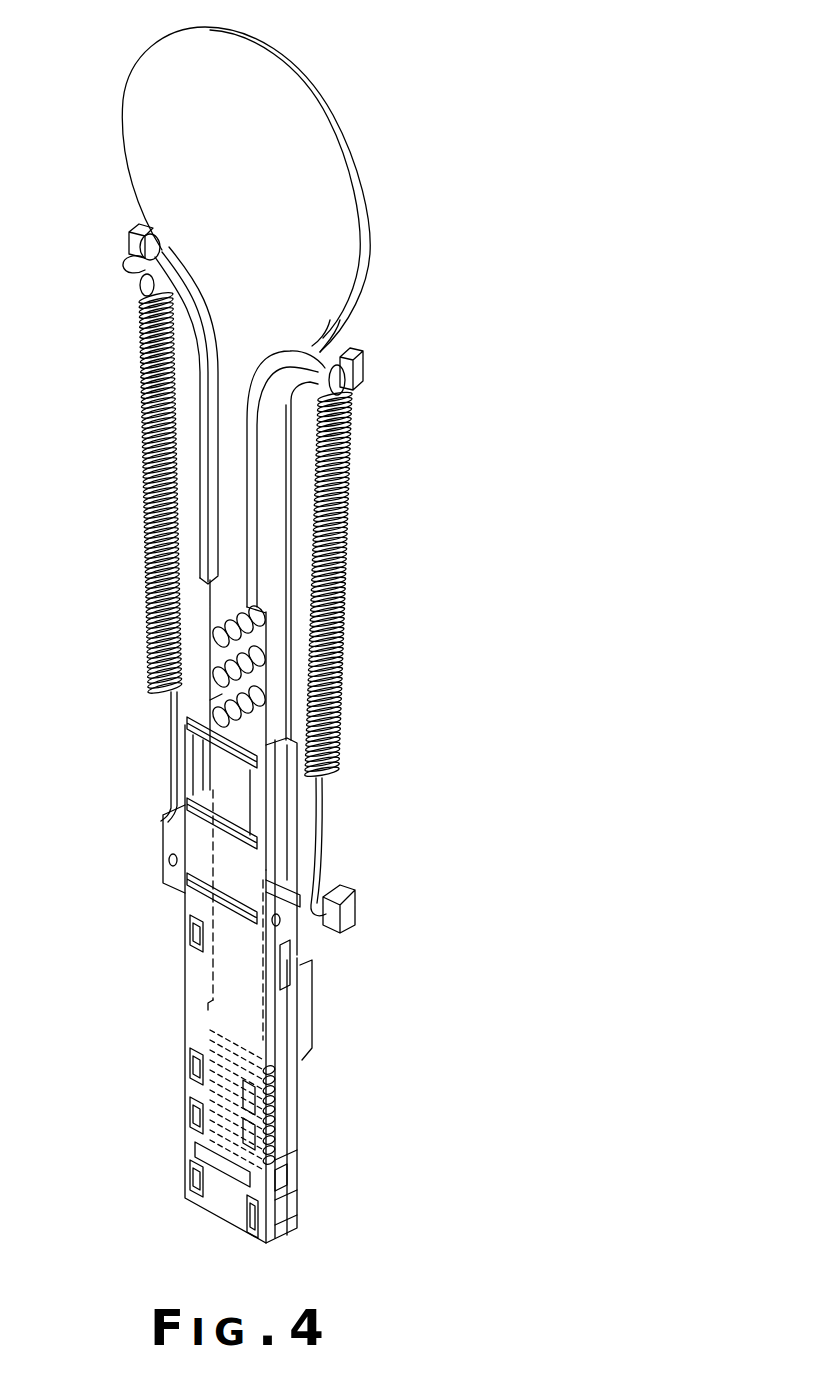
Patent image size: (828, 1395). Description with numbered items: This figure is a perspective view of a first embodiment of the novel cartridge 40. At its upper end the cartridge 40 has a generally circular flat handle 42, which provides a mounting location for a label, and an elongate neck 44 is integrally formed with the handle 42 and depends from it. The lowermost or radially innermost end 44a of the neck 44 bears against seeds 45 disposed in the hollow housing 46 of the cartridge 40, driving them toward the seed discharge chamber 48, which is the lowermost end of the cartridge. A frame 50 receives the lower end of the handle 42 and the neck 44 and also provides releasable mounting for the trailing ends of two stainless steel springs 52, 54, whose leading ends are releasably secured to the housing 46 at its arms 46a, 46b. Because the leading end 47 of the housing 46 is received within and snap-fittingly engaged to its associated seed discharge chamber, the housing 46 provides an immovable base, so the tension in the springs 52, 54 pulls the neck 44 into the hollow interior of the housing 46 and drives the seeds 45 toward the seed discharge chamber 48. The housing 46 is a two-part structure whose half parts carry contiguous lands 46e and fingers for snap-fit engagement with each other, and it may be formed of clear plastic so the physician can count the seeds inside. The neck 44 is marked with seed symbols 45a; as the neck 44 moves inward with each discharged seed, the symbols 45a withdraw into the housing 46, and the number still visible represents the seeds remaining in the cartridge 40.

The cartridge 40 is at (412, 316).
The handle 42 is at (330, 117).
The neck 44 is at (213, 640).
The lowermost end of neck 44a is at (210, 1000).
The seeds 45 is at (210, 1140).
The seed symbols 45a is at (207, 698).
The hollow housing 46 is at (165, 909).
The arm of housing 46a is at (168, 803).
The arm of housing 46b is at (346, 913).
The lands 46e is at (192, 1113).
The leading end of housing 47 is at (222, 1215).
The seed discharge chamber 48 is at (318, 1168).
The frame 50 is at (200, 420).
The spring 52 is at (145, 522).
The spring 54 is at (348, 548).